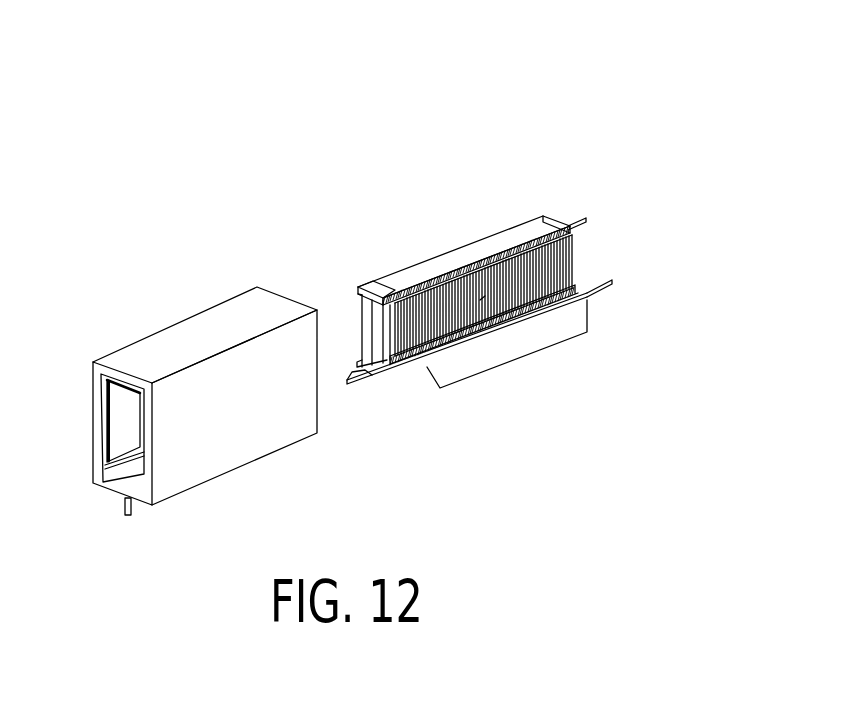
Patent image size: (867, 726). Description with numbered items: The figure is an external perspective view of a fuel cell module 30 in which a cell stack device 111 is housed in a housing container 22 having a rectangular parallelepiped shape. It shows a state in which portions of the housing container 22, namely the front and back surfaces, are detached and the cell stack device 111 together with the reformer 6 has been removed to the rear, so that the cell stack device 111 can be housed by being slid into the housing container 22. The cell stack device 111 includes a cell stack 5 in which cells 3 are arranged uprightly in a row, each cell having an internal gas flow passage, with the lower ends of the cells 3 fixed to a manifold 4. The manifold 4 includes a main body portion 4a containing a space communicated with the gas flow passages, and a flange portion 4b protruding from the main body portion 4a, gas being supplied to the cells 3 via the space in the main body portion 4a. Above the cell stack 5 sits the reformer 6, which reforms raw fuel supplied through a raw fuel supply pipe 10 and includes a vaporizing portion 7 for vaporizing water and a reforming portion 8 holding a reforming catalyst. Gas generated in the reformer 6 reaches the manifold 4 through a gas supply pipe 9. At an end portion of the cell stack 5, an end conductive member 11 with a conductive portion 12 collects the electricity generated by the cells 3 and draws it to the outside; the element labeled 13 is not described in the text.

The cell stack device 111 is at (502, 90).
The module 30 is at (128, 250).
The housing container 22 is at (128, 353).
The reformer 6 is at (473, 175).
The vaporizing portion 7 is at (380, 278).
The reforming portion 8 is at (440, 267).
The gas supply pipe 9 is at (362, 327).
The end conductive member 11 is at (390, 340).
The conductive portion 12 is at (365, 380).
The manifold 4 is at (390, 450).
The main body portion 4a is at (407, 370).
The flange portion 4b is at (390, 362).
The cell stack 5 is at (520, 357).
The connection portion 13 is at (483, 343).
The raw fuel supply pipe 10 is at (581, 211).
The cell 3 is at (577, 243).